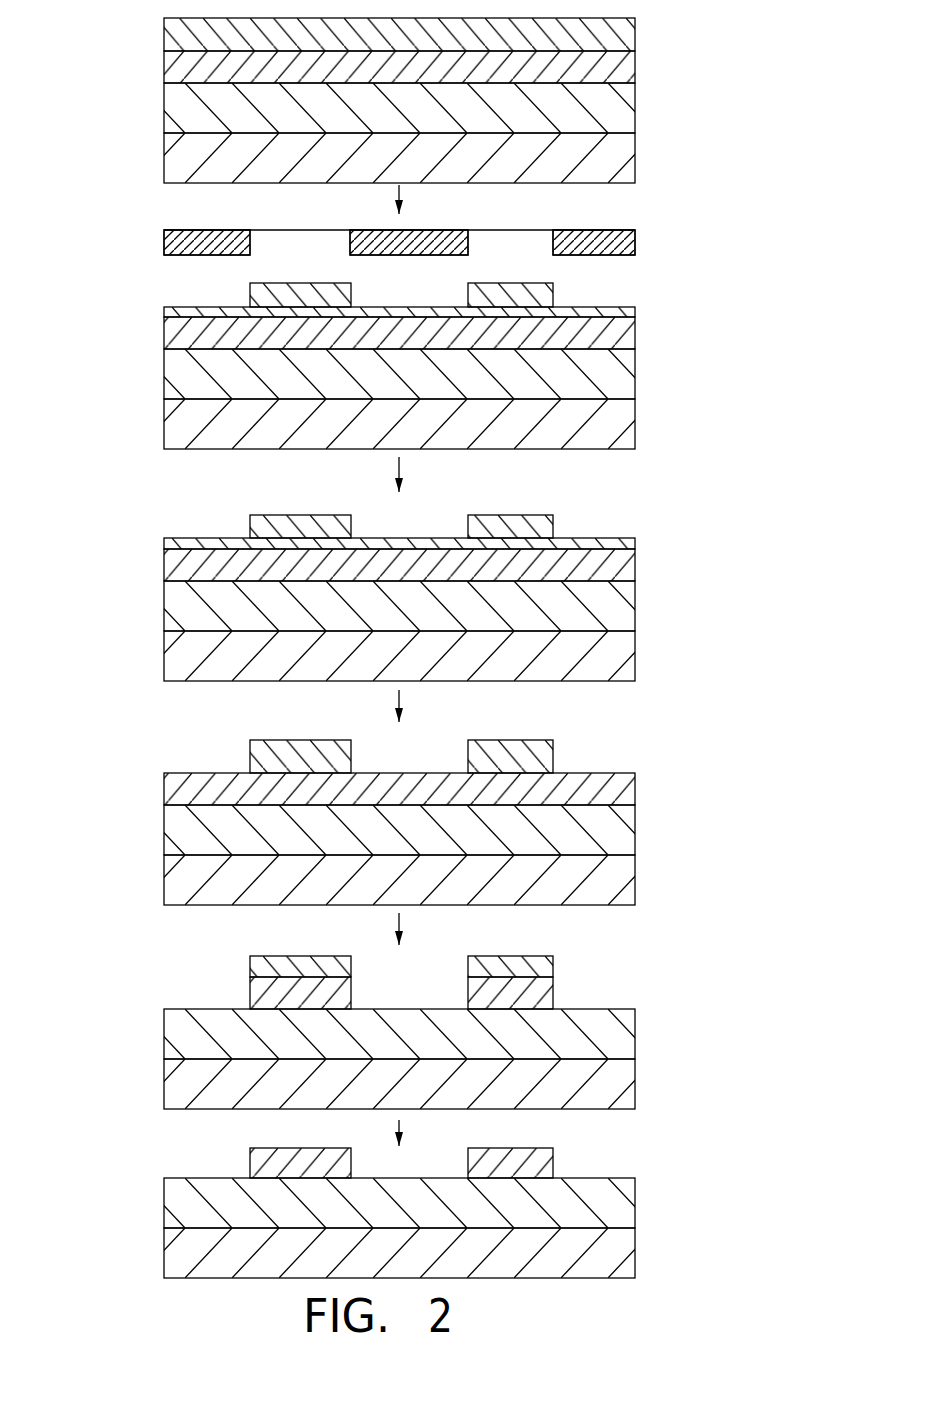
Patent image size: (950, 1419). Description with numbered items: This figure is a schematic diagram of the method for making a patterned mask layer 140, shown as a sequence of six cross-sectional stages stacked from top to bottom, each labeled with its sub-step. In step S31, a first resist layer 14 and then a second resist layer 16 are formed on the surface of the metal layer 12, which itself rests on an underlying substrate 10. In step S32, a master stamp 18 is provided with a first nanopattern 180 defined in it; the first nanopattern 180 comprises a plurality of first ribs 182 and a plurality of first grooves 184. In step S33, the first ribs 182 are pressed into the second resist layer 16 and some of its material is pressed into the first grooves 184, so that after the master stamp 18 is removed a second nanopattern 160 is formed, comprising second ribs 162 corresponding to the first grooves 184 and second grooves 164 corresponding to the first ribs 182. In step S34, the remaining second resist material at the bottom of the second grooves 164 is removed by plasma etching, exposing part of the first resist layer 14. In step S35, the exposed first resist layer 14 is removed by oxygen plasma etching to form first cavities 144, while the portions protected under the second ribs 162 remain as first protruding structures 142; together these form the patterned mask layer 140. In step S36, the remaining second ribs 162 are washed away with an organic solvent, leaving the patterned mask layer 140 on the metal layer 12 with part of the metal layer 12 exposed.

The substrate 10 is at (175, 167).
The metal layer 12 is at (175, 108).
The first resist layer 14 is at (177, 65).
The second resist layer 16 is at (182, 37).
The master stamp 18 is at (273, 230).
The first nanopattern 180 is at (68, 216).
The first ribs 182 is at (178, 247).
The first grooves 184 is at (272, 243).
The second nanopattern 160 is at (736, 255).
The second ribs 162 is at (535, 290).
The second grooves 164 is at (615, 300).
The patterned mask layer 140 is at (110, 1113).
The first protruding structures 142 is at (270, 1002).
The first cavities 144 is at (378, 1153).
The step S31 is at (661, 101).
The step S32 is at (661, 397).
The step S33 is at (661, 627).
The step S34 is at (661, 851).
The step S35 is at (661, 1056).
The step S36 is at (661, 1226).